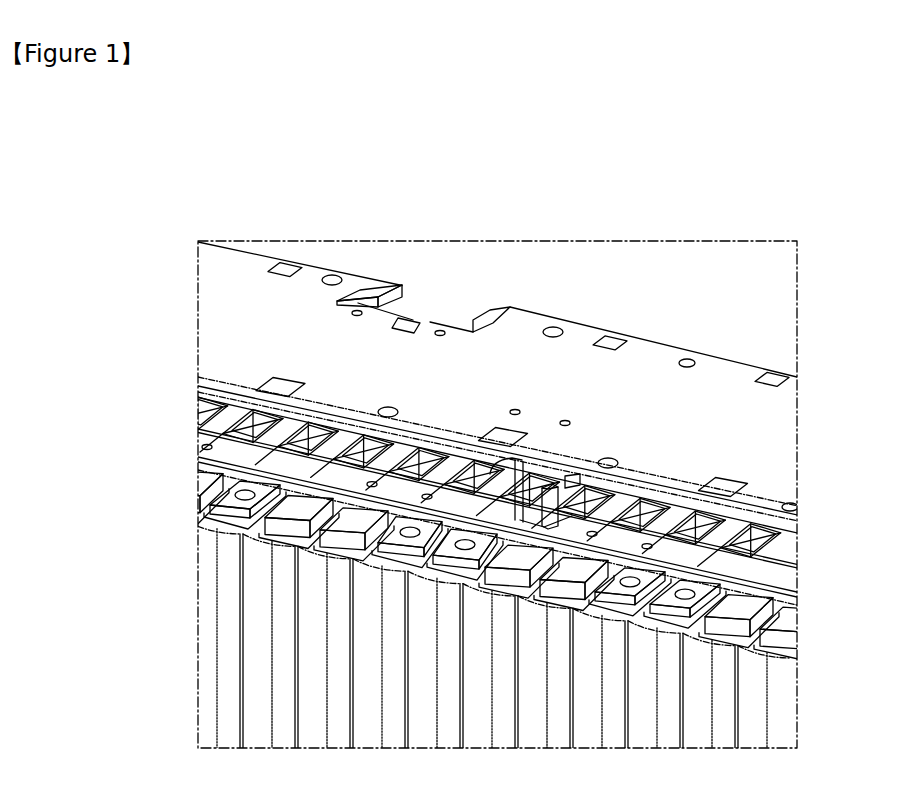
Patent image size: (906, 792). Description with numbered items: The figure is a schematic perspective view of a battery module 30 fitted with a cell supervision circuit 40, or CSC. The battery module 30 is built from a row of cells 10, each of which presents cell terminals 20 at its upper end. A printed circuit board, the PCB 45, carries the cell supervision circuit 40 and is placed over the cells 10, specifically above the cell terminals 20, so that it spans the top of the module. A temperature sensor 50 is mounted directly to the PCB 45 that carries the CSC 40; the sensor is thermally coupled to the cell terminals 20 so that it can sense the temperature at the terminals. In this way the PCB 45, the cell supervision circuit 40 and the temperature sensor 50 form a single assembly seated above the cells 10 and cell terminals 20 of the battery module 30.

The cells 10 is at (262, 625).
The cell terminals 20 is at (489, 528).
The battery module 30 is at (473, 594).
The cell supervision circuit 40 is at (223, 298).
The PCB 45 is at (220, 344).
The temperature sensor 50 is at (527, 493).